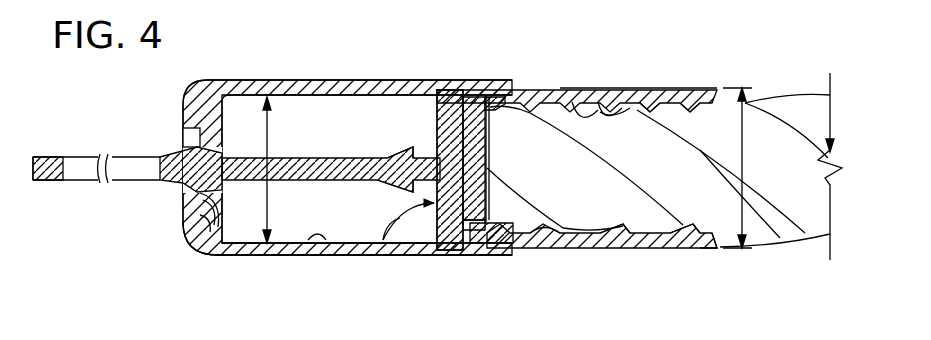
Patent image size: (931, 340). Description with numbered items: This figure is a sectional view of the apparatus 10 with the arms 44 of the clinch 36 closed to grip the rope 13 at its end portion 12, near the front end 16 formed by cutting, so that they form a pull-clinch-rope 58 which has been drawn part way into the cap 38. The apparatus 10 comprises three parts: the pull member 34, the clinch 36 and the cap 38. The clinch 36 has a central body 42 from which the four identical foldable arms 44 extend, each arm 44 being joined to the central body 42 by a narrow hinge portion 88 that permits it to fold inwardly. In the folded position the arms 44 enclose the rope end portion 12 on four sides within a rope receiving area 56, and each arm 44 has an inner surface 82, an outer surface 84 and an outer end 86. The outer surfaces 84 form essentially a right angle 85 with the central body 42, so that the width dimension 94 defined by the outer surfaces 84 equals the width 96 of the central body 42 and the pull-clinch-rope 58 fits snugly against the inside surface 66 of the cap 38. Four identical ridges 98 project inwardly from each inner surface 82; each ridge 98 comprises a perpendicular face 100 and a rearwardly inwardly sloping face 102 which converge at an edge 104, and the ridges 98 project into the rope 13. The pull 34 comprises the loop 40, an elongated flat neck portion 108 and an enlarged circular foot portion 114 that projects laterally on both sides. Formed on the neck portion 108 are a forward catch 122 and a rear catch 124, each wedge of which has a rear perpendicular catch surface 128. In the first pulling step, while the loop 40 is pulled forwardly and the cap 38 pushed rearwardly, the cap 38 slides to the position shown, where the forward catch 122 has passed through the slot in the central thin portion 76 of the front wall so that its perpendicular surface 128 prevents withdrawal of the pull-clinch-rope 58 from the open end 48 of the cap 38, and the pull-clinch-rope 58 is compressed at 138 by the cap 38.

The apparatus 10 is at (306, 40).
The end portion 12 is at (615, 127).
The rope 13 is at (797, 110).
The front end 16 is at (446, 100).
The pull member 34 is at (84, 148).
The clinch 36 is at (661, 76).
The cap 38 is at (296, 72).
The loop 40 is at (88, 174).
The central body 42 is at (437, 140).
The foldable arms 44 is at (682, 93).
The open end 48 is at (294, 236).
The rope receiving area 56 is at (563, 174).
The pull-clinch-rope 58 is at (704, 74).
The inside surface 66 is at (318, 242).
The central thin portion 76 is at (198, 200).
The inner surface 82 is at (541, 228).
The outer surface 84 is at (601, 250).
The right angle 85 is at (385, 243).
The outer end 86 is at (747, 249).
The hinge portion 88 is at (466, 240).
The width dimension 94 is at (742, 143).
The width 96 is at (281, 134).
The ridges 98 is at (580, 117).
The perpendicular face 100 is at (553, 100).
The rearwardly inwardly sloping face 102 is at (603, 110).
The edge 104 is at (544, 108).
The neck portion 108 is at (328, 157).
The foot portion 114 is at (481, 93).
The forward catch 122 is at (176, 148).
The rear catch 124 is at (394, 157).
The rear perpendicular catch surface 128 is at (214, 258).
The compression location 138 is at (478, 242).